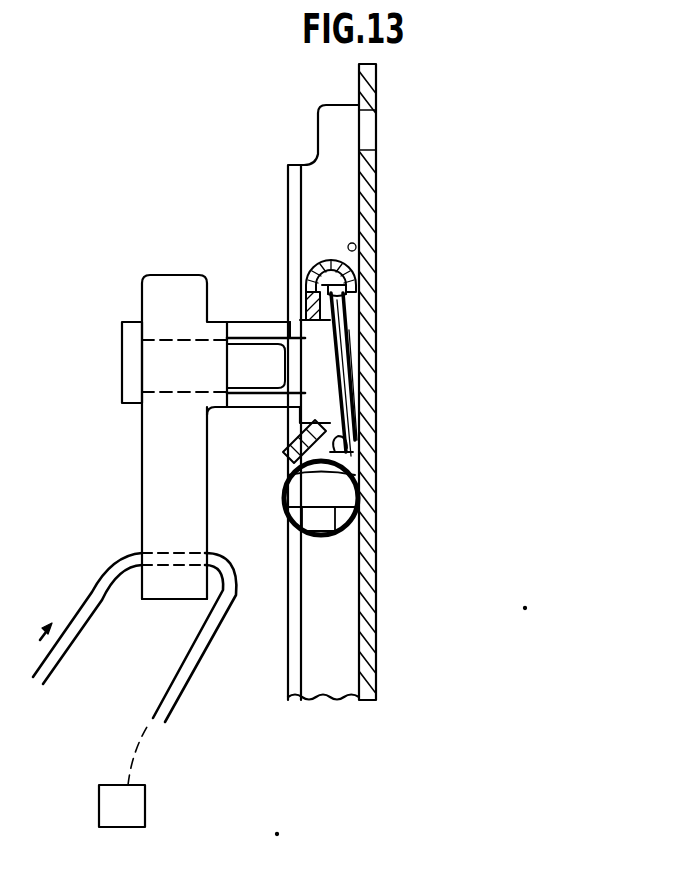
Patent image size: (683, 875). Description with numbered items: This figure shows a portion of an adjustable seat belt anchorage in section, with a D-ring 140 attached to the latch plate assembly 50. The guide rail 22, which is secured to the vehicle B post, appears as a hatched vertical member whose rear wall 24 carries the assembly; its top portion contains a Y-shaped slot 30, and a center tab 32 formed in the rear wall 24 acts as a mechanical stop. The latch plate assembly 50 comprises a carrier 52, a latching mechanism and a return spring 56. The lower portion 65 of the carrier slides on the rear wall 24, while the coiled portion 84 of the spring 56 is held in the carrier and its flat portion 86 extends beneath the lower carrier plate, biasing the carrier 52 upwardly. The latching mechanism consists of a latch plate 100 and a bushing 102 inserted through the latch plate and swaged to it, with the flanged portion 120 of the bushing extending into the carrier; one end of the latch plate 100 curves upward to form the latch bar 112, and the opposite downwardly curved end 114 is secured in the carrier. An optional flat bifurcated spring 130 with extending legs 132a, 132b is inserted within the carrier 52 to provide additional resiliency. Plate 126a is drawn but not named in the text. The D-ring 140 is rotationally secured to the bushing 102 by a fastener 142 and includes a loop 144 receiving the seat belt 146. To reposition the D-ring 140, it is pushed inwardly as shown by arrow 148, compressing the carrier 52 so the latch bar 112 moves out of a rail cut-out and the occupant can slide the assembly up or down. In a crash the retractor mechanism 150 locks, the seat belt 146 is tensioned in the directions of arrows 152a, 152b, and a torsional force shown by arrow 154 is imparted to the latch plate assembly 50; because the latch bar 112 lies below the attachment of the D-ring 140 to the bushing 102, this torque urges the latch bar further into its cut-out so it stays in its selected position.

The guide rail 22 is at (379, 86).
The rear wall 24 is at (377, 622).
The Y-shaped slot 30 is at (366, 256).
The center tab 32 is at (348, 246).
The latch plate assembly 50 is at (273, 314).
The carrier 52 is at (372, 266).
The return spring 56 is at (350, 534).
The lower portion 65 is at (364, 287).
The coiled portion 84 is at (287, 524).
The flat portion 86 is at (355, 308).
The latch plate 100 is at (304, 290).
The bushing 102 is at (268, 412).
The latch bar 112 is at (283, 458).
The downwardly curved end 114 is at (310, 268).
The flanged portion 120 is at (366, 272).
The bracket plate 126a is at (320, 177).
The bifurcated spring 130 is at (355, 452).
The extending leg 132a is at (359, 414).
The extending leg 132b is at (356, 394).
The D-ring 140 is at (157, 308).
The fastener 142 is at (133, 373).
The loop 144 is at (176, 526).
The seat belt 146 is at (58, 656).
The arrow 148 is at (138, 470).
The retractor mechanism 150 is at (145, 805).
The arrow 152a is at (72, 584).
The arrow 152b is at (207, 668).
The arrow 154 is at (63, 407).